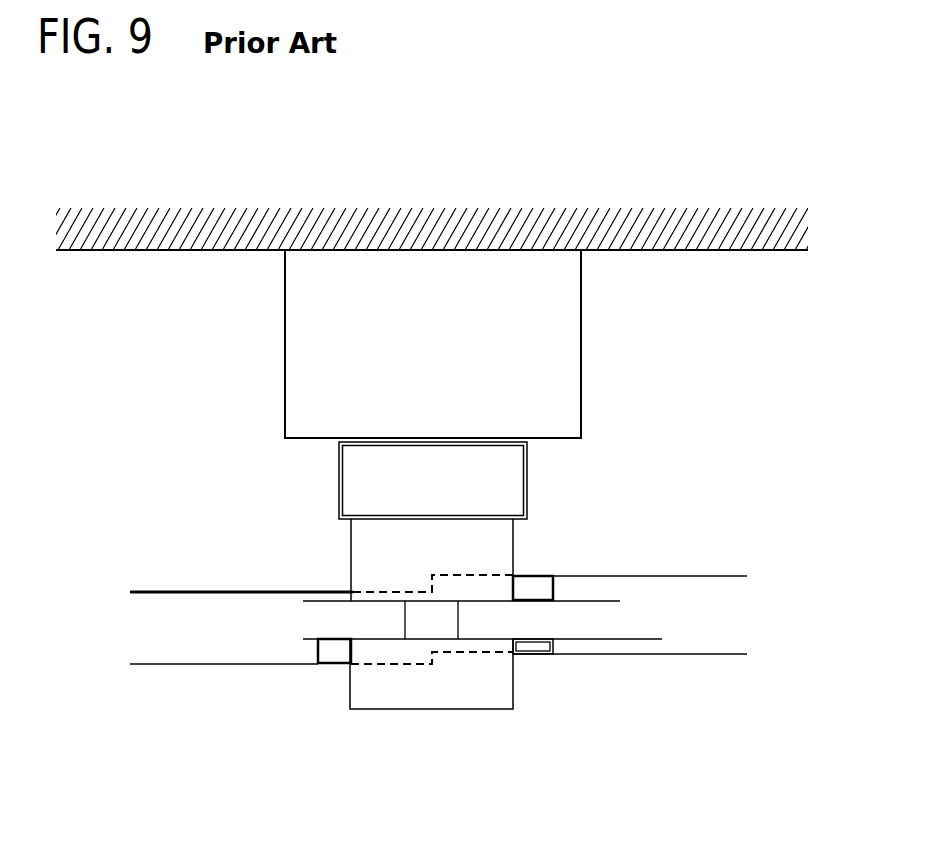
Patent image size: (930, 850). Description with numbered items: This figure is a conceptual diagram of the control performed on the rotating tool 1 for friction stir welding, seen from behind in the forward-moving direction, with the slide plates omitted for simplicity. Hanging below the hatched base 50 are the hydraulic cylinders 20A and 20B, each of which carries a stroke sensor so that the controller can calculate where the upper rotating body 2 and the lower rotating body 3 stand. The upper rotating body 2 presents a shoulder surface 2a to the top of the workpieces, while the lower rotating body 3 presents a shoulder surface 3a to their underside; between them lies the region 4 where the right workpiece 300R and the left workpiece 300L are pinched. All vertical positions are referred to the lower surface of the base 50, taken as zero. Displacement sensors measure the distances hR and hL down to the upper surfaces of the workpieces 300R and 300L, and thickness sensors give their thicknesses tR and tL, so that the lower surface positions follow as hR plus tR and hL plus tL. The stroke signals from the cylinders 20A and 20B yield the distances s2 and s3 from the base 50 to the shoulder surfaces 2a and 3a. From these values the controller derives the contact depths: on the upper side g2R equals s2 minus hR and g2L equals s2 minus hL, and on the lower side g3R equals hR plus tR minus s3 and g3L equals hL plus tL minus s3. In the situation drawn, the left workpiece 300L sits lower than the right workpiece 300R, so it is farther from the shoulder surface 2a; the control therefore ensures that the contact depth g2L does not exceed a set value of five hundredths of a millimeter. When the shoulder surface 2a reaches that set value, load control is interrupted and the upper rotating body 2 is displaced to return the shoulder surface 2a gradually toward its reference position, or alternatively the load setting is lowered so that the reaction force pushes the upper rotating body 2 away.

The base 50 is at (122, 252).
The hydraulic cylinder 20A is at (306, 420).
The hydraulic cylinder 20B is at (508, 483).
The upper rotating body 2 is at (378, 604).
The shoulder surface 2a is at (381, 537).
The spacer 4 is at (450, 617).
The lower rotating body 3 is at (392, 693).
The shoulder surface 3a is at (368, 682).
The rotating tool 1 is at (448, 723).
The left workpiece 300L is at (197, 652).
The right workpiece 300R is at (703, 646).
The distance hL is at (257, 250).
The distance hR is at (688, 250).
The distance s2 is at (607, 250).
The distance s3 is at (648, 250).
The thickness tL is at (257, 592).
The thickness tR is at (688, 576).
The contact depth g2L is at (321, 610).
The contact depth g2R is at (557, 609).
The contact depth g3L is at (317, 620).
The contact depth g3R is at (553, 622).